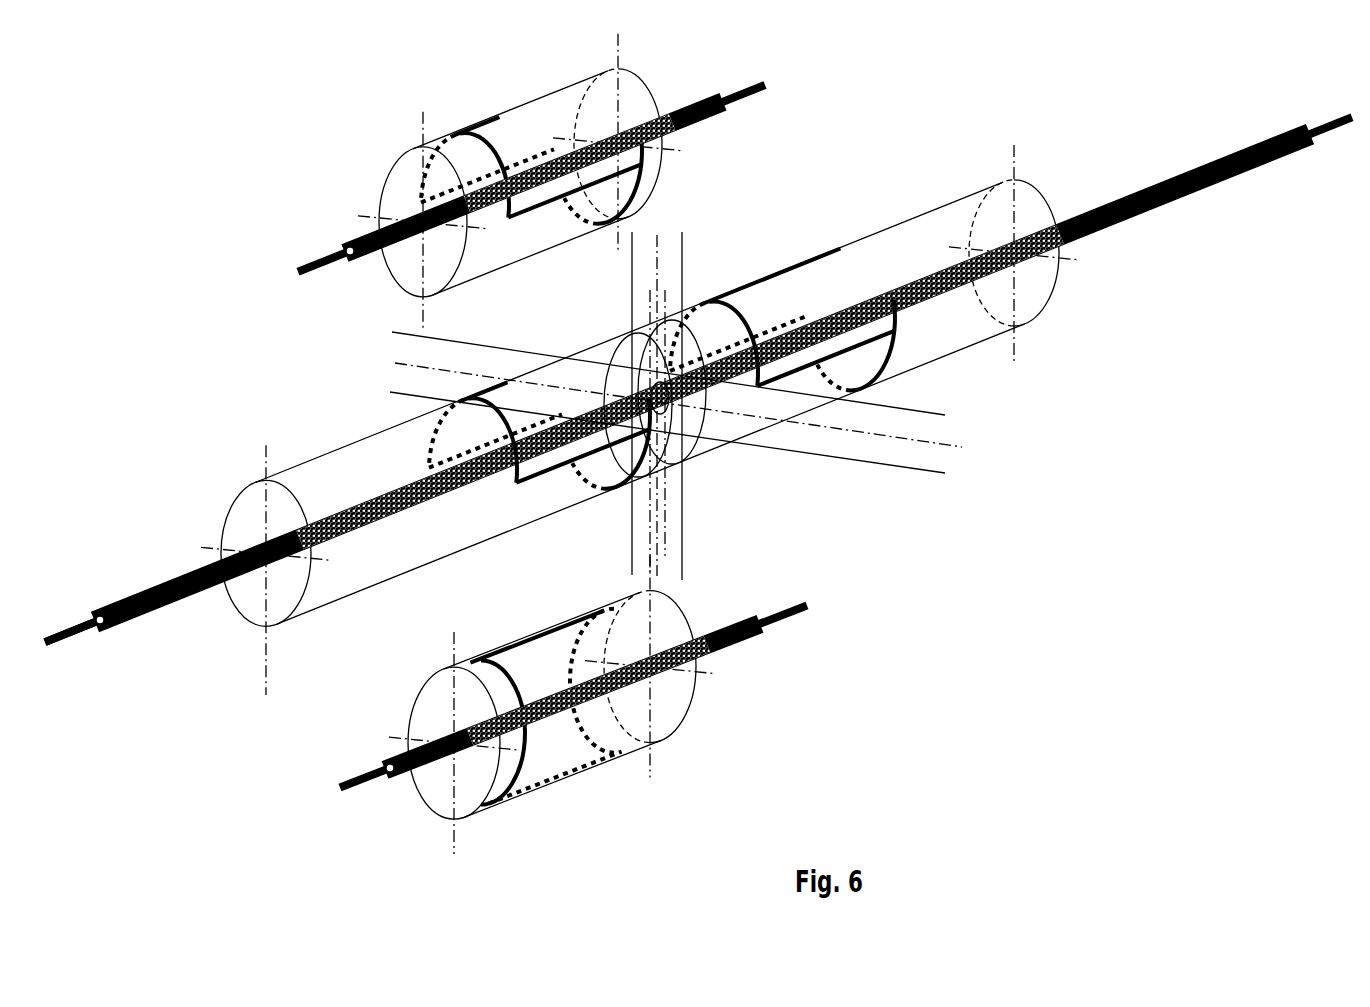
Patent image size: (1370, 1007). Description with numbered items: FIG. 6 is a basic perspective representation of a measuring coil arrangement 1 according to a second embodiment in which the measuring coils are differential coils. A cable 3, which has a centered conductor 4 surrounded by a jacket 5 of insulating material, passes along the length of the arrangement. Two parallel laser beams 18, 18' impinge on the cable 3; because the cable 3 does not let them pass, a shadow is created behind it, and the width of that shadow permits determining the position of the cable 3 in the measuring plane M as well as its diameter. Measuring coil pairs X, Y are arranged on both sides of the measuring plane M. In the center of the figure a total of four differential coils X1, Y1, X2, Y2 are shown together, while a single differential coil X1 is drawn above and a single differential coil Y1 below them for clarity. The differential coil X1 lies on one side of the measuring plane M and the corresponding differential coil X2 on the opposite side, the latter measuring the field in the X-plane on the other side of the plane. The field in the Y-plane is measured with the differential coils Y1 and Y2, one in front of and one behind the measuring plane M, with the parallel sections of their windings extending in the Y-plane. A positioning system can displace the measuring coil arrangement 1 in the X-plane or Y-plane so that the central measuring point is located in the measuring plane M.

The measuring coil arrangement 1 is at (920, 594).
The cable 3 is at (138, 637).
The centered conductor 4 is at (65, 640).
The jacket 5 is at (95, 630).
The laser beam 18 is at (713, 453).
The laser beam 18' is at (693, 385).
The measuring plane M is at (948, 424).
The measuring coil pair X is at (236, 542).
The measuring coil pair Y is at (254, 588).
The differential coil X1 is at (477, 88).
The differential coil X2 is at (827, 257).
The differential coil Y1 is at (495, 538).
The differential coil Y2 is at (723, 447).